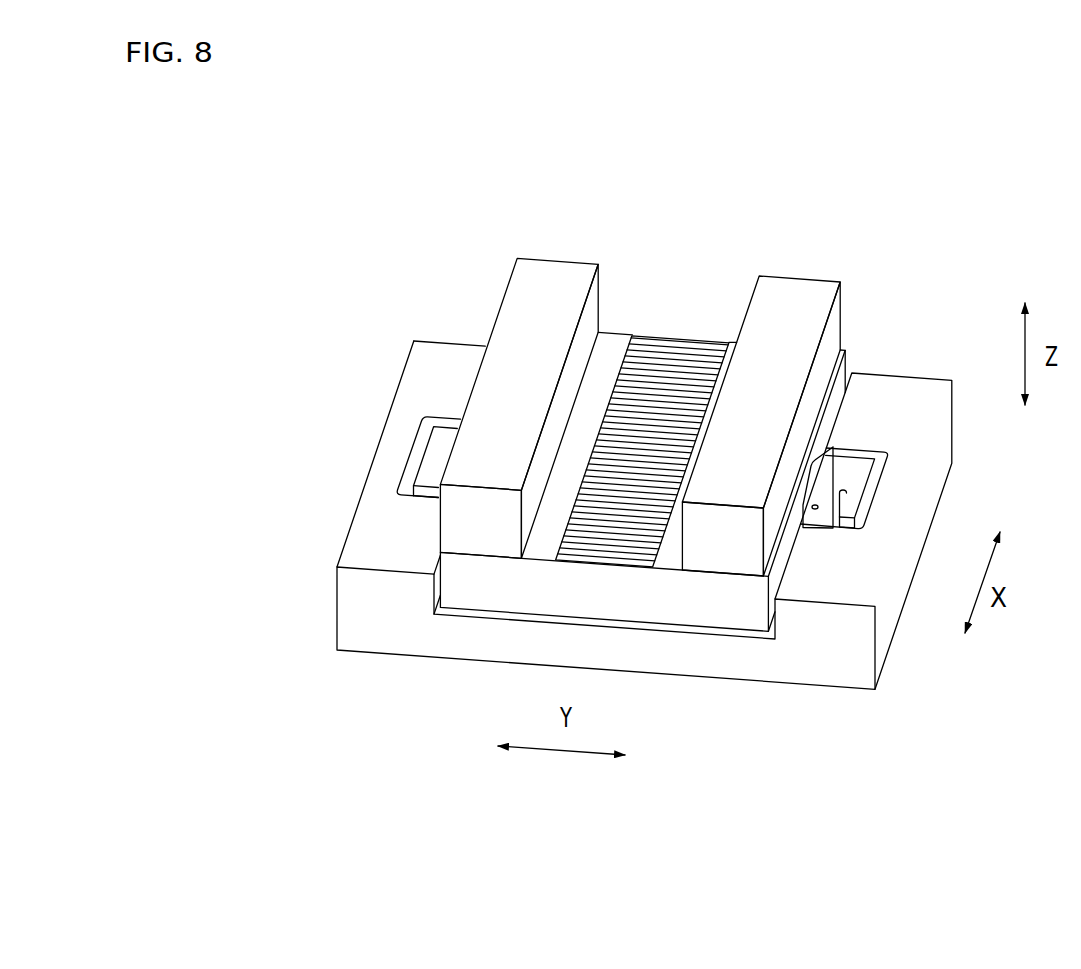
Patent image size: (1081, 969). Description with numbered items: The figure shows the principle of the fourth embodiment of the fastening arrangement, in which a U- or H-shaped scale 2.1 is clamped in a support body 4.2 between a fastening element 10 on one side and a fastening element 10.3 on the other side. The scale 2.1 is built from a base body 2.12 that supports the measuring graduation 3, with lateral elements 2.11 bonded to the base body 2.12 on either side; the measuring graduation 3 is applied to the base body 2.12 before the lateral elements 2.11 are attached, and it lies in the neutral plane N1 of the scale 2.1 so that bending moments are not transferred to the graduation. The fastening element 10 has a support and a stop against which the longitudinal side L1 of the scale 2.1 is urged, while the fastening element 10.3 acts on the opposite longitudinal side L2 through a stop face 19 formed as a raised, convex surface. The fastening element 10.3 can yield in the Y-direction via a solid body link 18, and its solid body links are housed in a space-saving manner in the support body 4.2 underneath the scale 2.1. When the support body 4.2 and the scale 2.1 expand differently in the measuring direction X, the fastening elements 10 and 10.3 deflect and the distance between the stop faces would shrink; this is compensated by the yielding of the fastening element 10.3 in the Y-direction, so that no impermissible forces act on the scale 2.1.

The scale 2.1 is at (614, 336).
The lateral elements 2.11 is at (563, 296).
The base body 2.12 is at (712, 338).
The measuring graduation 3 is at (668, 350).
The support body 4.2 is at (362, 617).
The fastening element 10 is at (410, 451).
The fastening element 10.3 is at (852, 463).
The solid body link 18 is at (845, 458).
The stop face 19 is at (788, 484).
The longitudinal side of the scale L1 is at (442, 586).
The longitudinal side of the scale L2 is at (770, 592).
The neutral plane N1 is at (734, 578).